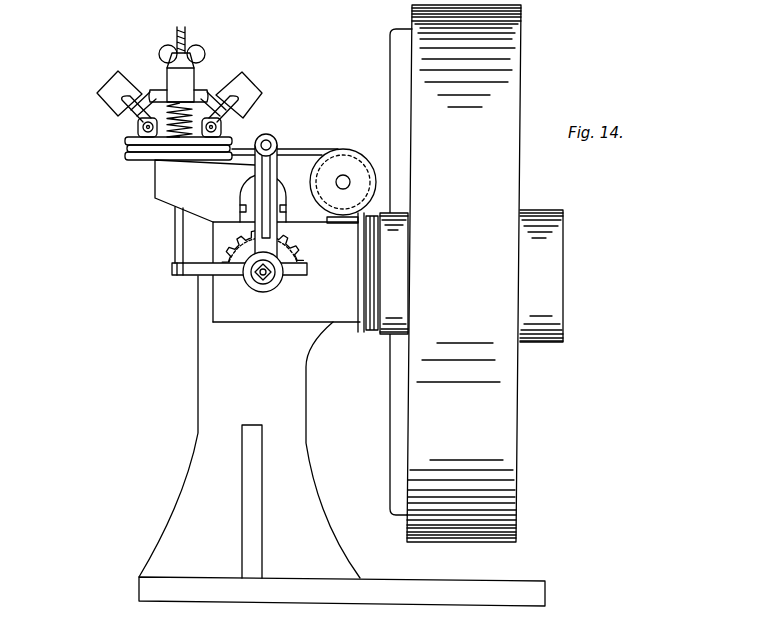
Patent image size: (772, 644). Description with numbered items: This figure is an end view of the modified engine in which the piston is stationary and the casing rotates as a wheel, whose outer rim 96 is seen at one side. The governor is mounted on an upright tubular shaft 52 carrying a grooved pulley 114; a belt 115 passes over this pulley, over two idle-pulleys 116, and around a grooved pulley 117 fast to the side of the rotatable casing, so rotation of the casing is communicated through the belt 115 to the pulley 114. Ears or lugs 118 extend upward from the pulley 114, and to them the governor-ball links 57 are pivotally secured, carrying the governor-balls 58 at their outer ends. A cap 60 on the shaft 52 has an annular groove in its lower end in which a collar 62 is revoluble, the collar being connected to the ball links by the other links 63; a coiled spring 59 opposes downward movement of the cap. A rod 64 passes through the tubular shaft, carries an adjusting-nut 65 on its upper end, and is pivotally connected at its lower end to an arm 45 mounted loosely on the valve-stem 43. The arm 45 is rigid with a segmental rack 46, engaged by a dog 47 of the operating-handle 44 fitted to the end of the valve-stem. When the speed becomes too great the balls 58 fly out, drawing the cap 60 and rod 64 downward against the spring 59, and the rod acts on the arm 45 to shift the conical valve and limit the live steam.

The valve-stem 43 is at (262, 274).
The operating-handle 44 is at (274, 142).
The arm 45 is at (210, 270).
The segmental rack 46 is at (302, 265).
The dog 47 is at (265, 217).
The tubular shaft 52 is at (167, 122).
The governor-ball links 57 is at (130, 111).
The governor-balls 58 is at (103, 89).
The coiled spring 59 is at (140, 122).
The cap 60 is at (167, 73).
The collar 62 is at (195, 84).
The links 63 is at (143, 111).
The rod 64 is at (184, 40).
The adjusting-nut 65 is at (167, 46).
The outer rim 96 is at (517, 163).
The grooved pulley 114 is at (127, 157).
The belt 115 is at (320, 150).
The idle-pulleys 116 is at (358, 156).
The grooved pulley 117 is at (368, 333).
The ears or lugs 118 is at (140, 121).